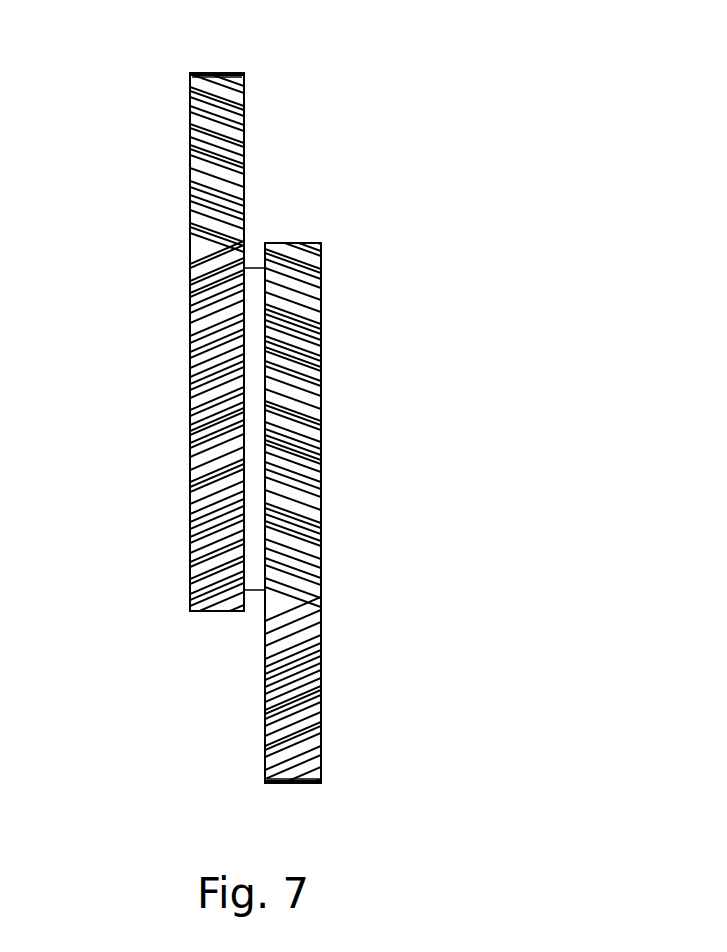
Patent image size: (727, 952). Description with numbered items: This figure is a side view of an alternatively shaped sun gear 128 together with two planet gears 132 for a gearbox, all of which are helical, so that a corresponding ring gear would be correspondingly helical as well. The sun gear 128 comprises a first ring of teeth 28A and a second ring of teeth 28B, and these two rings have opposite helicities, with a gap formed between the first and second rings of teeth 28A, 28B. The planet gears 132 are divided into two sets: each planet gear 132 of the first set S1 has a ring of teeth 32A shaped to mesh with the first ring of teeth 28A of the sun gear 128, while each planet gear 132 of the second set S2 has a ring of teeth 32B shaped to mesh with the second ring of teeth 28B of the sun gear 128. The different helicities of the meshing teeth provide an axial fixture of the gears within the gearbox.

The sun gear 128 is at (172, 455).
The first ring of teeth 28A is at (220, 611).
The second ring of teeth 28B is at (296, 243).
The planet gear 132 is at (190, 196).
The first set S1 is at (203, 70).
The second set S2 is at (287, 787).
The ring of teeth 32A is at (232, 73).
The ring of teeth 32B is at (305, 783).